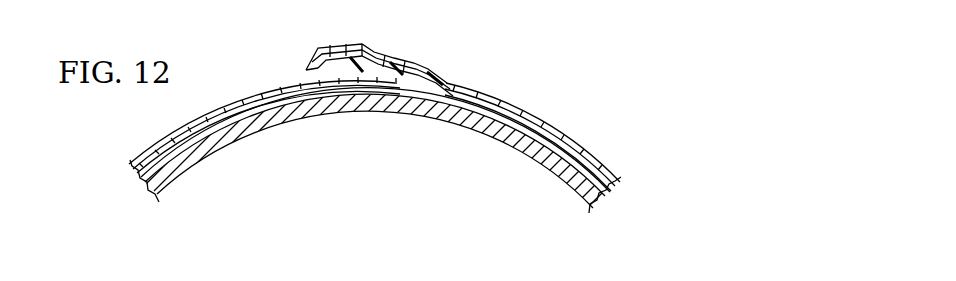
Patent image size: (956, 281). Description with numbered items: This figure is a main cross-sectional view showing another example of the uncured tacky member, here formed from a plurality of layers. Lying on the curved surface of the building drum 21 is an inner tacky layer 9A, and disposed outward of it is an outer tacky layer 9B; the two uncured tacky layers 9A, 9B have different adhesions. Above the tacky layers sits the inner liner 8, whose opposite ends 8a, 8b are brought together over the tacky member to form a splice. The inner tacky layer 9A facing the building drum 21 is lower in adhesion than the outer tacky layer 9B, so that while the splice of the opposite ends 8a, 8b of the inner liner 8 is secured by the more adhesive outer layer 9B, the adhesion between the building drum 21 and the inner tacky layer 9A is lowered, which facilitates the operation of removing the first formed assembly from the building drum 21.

The inner liner 8 is at (234, 104).
The opposite end of the inner liner 8a is at (313, 90).
The opposite end of the inner liner 8b is at (340, 80).
The inner tacky layer 9A is at (495, 105).
The outer tacky layer 9B is at (499, 92).
The building drum 21 is at (607, 167).